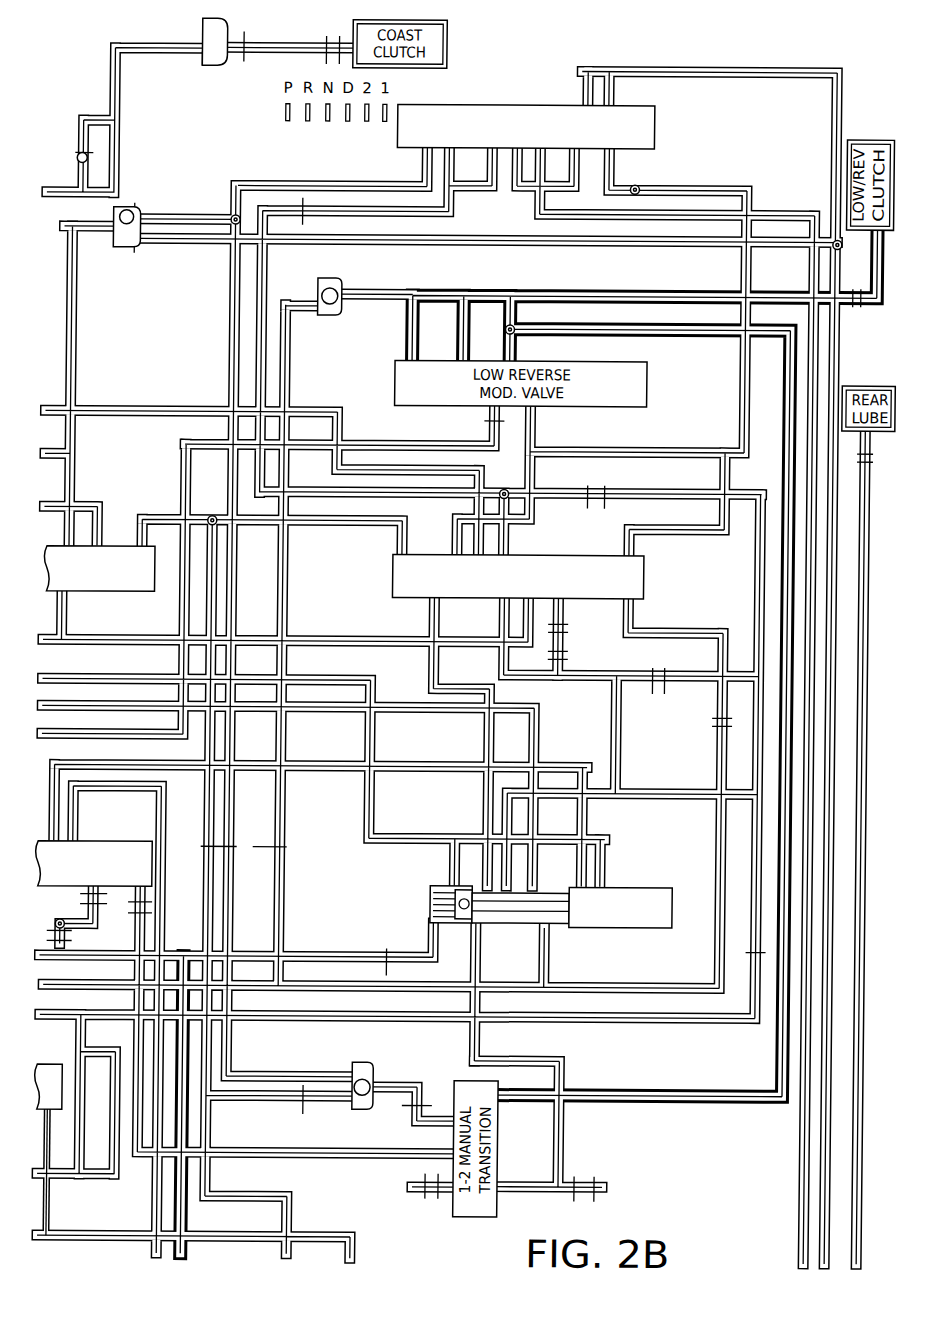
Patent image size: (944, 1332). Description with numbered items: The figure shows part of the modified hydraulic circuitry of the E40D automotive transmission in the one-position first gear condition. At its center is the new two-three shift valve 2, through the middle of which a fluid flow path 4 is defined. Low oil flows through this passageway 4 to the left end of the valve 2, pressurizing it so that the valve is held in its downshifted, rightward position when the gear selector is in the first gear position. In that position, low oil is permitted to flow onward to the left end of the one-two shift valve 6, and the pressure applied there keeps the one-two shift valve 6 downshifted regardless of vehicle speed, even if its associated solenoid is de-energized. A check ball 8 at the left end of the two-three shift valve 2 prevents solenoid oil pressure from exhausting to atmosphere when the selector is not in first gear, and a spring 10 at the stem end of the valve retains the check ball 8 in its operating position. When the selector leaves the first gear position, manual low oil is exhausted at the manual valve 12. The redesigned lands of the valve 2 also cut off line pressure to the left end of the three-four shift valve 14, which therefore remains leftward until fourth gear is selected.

The 2-3 shift valve 2 is at (672, 884).
The fluid flow path 4 is at (510, 905).
The 1-2 shift valve 6 is at (112, 849).
The check ball 8 is at (490, 905).
The spring 10 is at (442, 890).
The manual valve 12 is at (658, 128).
The 3-4 shift valve 14 is at (651, 571).